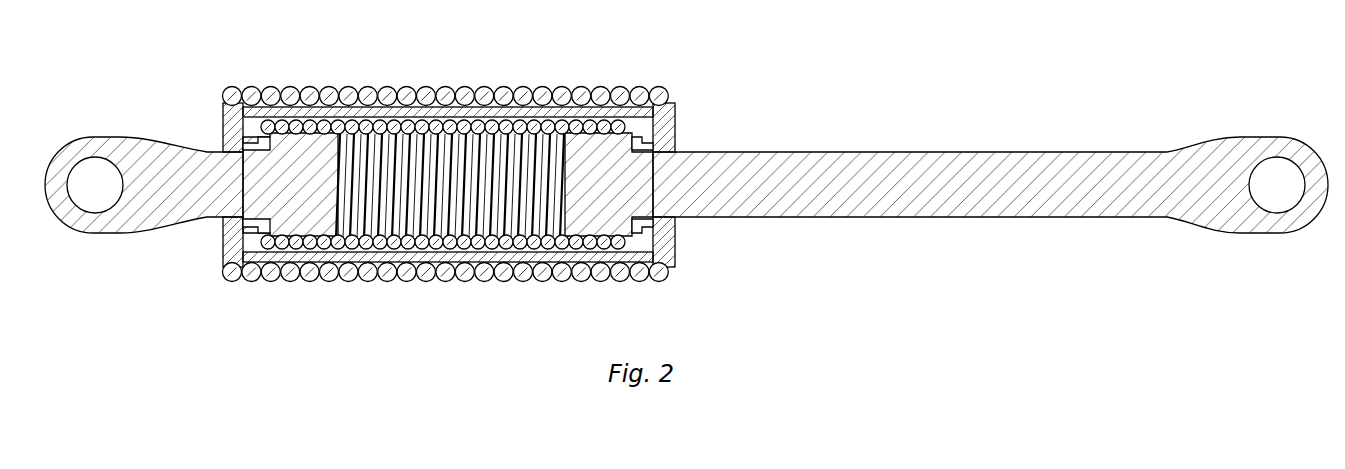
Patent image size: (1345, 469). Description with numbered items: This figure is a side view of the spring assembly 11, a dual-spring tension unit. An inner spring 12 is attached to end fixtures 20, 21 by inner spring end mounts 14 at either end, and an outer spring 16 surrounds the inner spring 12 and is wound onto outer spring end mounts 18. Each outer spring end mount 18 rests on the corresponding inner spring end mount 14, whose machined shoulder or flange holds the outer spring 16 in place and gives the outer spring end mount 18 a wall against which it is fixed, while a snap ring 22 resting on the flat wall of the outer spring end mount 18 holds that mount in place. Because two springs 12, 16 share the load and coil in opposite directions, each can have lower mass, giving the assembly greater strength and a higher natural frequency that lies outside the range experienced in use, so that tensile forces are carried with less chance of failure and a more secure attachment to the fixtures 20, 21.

The vibration damper assembly 11 is at (686, 244).
The inner spring 12 is at (406, 175).
The inner spring end mount 14 is at (282, 148).
The outer spring 16 is at (493, 275).
The outer spring end mount 18 is at (235, 252).
The fixture 20 is at (1187, 185).
The fixture 21 is at (133, 217).
The snap ring 22 is at (648, 143).